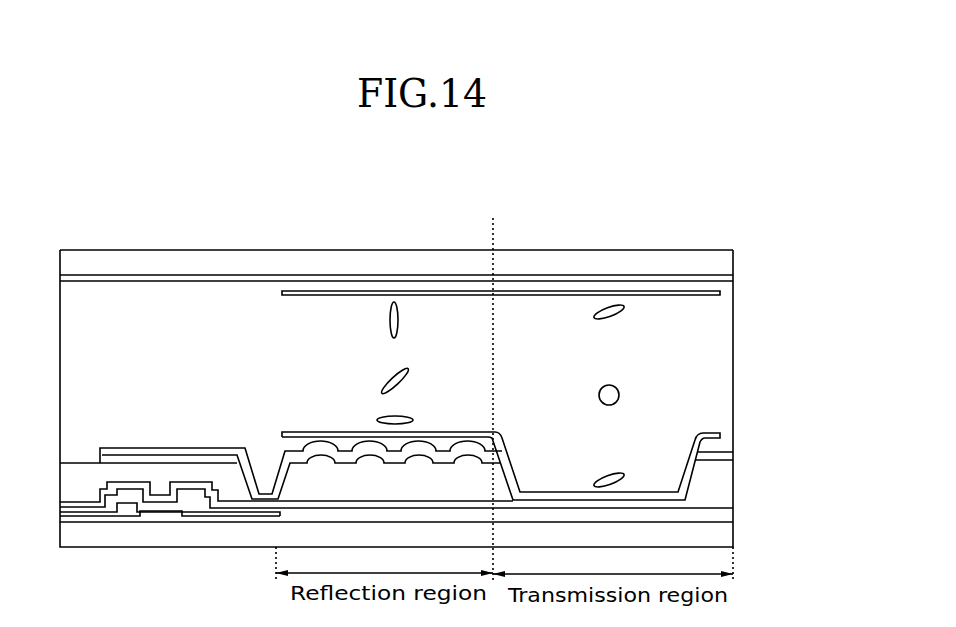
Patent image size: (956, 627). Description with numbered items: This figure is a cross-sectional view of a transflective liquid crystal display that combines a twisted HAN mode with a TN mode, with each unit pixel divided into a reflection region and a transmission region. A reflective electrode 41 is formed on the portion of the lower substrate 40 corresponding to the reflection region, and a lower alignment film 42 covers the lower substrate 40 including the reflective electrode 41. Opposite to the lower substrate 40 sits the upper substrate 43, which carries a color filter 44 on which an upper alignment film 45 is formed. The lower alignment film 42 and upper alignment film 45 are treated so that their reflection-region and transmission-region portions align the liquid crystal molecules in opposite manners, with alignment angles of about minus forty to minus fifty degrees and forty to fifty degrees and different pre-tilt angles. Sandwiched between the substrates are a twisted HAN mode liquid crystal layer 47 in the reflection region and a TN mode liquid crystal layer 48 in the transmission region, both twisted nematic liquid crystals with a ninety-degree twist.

The lower substrate 40 is at (733, 538).
The reflective electrode 41 is at (733, 457).
The lower alignment film 42 is at (722, 436).
The upper substrate 43 is at (728, 262).
The color filter 44 is at (728, 280).
The upper alignment film 45 is at (722, 294).
The twisted HAN mode liquid crystal layer 47 is at (395, 302).
The TN mode liquid crystal layer 48 is at (613, 393).